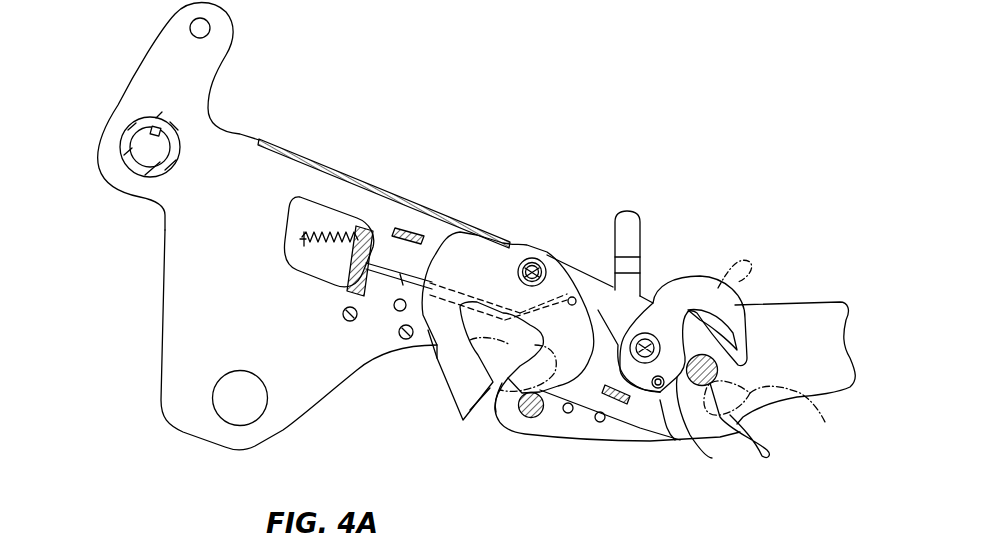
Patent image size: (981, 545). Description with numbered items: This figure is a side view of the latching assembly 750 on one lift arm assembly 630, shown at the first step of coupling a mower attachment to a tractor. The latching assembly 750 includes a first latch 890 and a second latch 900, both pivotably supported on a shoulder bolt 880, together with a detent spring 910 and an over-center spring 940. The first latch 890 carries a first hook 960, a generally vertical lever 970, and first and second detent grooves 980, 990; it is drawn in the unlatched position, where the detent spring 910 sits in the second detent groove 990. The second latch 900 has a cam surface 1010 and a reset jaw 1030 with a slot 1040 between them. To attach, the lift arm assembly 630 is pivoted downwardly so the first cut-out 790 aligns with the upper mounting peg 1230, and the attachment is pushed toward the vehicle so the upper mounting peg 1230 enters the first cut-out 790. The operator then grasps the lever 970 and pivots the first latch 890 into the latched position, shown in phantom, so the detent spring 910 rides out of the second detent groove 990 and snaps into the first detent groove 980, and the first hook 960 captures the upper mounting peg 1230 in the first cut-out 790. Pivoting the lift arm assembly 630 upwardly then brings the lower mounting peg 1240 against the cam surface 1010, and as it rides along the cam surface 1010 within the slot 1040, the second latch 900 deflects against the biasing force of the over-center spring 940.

The lift arm assembly 630 is at (562, 70).
The latching assembly 750 is at (440, 185).
The first cut-out 790 is at (752, 420).
The shoulder bolt 880 is at (541, 266).
The first latch 890 is at (686, 298).
The second latch 900 is at (462, 258).
The detent spring 910 is at (663, 428).
The over-center spring 940 is at (327, 228).
The first hook 960 is at (742, 322).
The lever 970 is at (626, 218).
The first detent groove 980 is at (659, 390).
The second detent groove 990 is at (615, 410).
The cam surface 1010 is at (505, 425).
The reset jaw 1030 is at (447, 380).
The slot 1040 is at (481, 418).
The upper mounting peg 1230 is at (700, 386).
The lower mounting peg 1240 is at (533, 418).